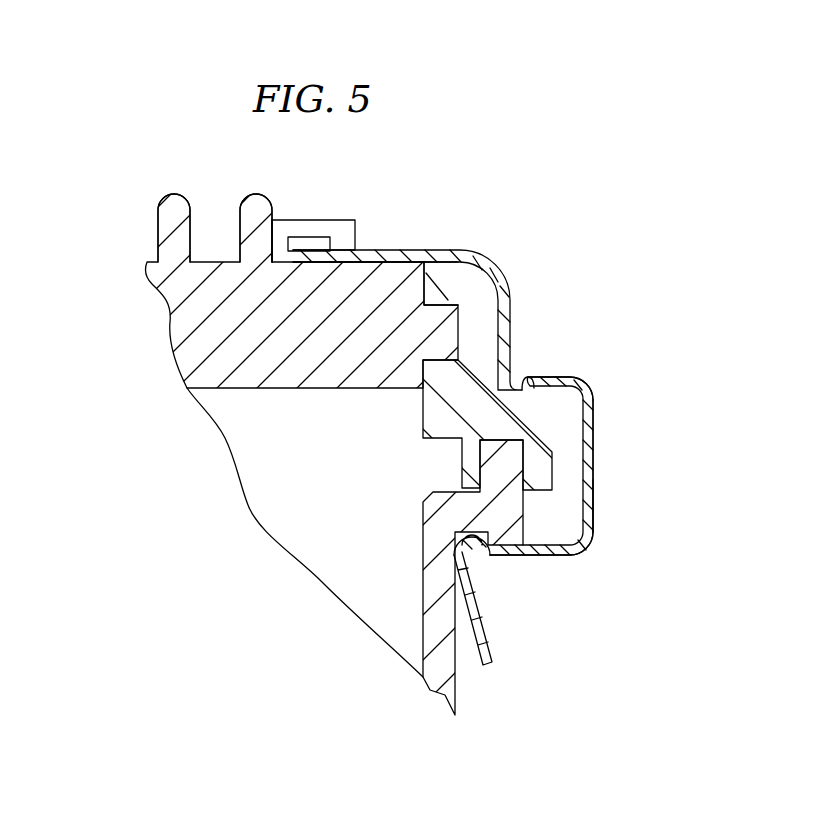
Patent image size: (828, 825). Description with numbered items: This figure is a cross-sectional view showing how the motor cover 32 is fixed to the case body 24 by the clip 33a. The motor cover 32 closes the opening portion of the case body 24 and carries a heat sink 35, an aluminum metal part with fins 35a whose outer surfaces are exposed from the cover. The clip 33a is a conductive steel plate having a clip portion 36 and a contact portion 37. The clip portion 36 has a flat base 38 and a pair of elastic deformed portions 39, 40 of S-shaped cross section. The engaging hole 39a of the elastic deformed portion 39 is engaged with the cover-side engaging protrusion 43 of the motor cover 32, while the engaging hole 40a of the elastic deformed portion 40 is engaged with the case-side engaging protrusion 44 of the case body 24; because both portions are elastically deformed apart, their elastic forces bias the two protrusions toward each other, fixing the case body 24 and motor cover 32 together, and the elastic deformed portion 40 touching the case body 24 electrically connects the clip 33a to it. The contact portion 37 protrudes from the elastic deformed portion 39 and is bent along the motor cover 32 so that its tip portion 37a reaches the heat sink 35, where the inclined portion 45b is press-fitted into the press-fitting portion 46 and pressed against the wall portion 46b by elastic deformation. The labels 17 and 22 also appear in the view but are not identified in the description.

The connector assembly 17 is at (560, 230).
The housing unit 22 is at (537, 276).
The case body 24 is at (421, 608).
The motor cover 32 is at (421, 410).
The clip 33a is at (604, 538).
The heat sink 35 is at (260, 394).
The fins 35a is at (172, 229).
The clip portion 36 is at (599, 488).
The contact portion 37 is at (440, 246).
The tip portion 37a is at (312, 266).
The base 38 is at (594, 446).
The elastic deformed portion 39 is at (571, 377).
The engaging hole 39a is at (548, 379).
The elastic deformed portion 40 is at (563, 557).
The engaging hole 40a is at (527, 556).
The cover-side engaging protrusion 43 is at (528, 376).
The case-side engaging protrusion 44 is at (493, 558).
The inclined portion 45b is at (311, 243).
The press-fitting portion 46 is at (357, 217).
The wall portion 46b is at (288, 226).